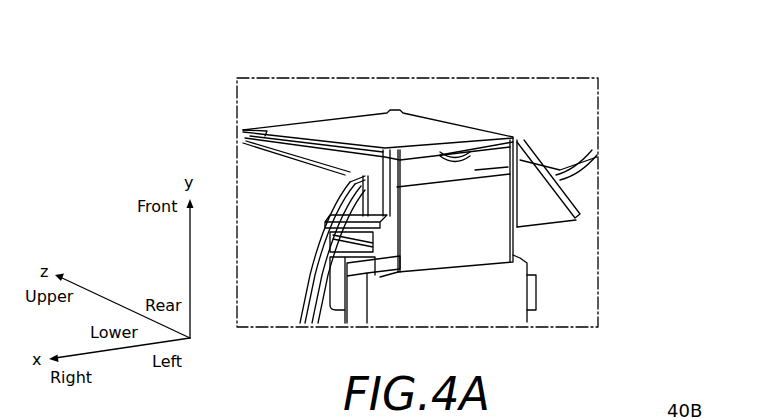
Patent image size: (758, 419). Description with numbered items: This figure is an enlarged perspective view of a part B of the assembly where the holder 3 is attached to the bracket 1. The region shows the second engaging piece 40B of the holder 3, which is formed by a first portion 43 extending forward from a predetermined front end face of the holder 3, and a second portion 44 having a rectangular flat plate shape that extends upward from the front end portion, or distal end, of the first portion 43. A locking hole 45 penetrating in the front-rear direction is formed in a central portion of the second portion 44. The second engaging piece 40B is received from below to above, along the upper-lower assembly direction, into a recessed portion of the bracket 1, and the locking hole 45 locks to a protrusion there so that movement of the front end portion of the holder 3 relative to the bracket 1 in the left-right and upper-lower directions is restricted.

The bracket 1 is at (455, 116).
The holder 3 is at (465, 307).
The first portion 43 is at (497, 198).
The second portion 44 is at (473, 168).
The locking hole 45 is at (438, 160).
The second engaging piece 40B is at (689, 68).
The part B is at (572, 76).